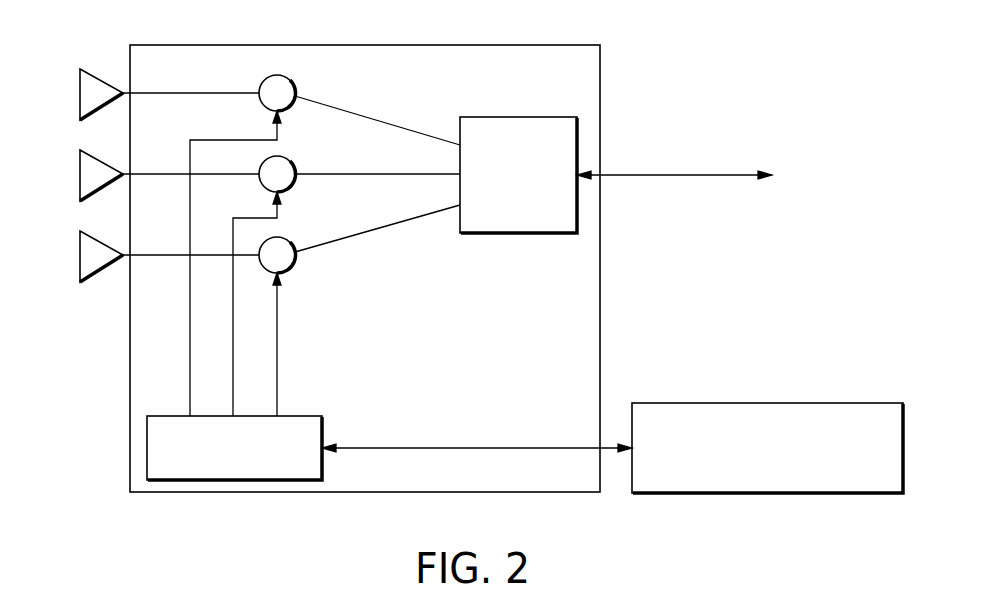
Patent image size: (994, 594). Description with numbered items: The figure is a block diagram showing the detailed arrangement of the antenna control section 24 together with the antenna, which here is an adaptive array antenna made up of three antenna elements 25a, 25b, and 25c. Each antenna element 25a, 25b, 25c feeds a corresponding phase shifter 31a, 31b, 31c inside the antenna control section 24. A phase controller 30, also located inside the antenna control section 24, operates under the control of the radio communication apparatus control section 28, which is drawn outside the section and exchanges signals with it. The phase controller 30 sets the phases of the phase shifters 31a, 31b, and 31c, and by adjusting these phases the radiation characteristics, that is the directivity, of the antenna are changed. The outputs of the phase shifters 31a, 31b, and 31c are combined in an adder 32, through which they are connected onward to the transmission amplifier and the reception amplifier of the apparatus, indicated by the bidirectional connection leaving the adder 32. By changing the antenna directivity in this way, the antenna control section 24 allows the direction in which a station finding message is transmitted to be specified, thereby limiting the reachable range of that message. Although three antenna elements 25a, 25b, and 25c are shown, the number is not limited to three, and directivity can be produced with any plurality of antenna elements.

The antenna control section 24 is at (383, 44).
The antenna element 25a is at (80, 92).
The antenna element 25b is at (80, 174).
The antenna element 25c is at (80, 254).
The phase shifter 31a is at (286, 78).
The phase shifter 31b is at (286, 162).
The phase shifter 31c is at (286, 242).
The phase controller 30 is at (303, 415).
The adder 32 is at (516, 116).
The radio communication apparatus control section 28 is at (839, 402).